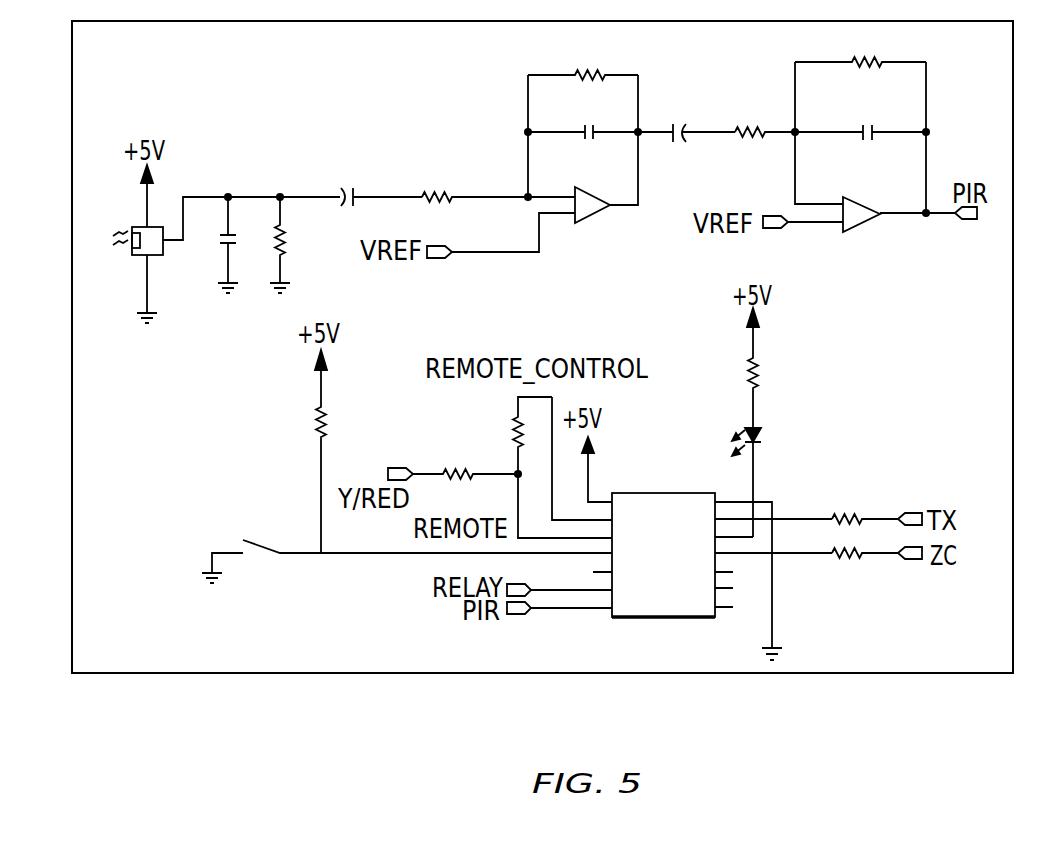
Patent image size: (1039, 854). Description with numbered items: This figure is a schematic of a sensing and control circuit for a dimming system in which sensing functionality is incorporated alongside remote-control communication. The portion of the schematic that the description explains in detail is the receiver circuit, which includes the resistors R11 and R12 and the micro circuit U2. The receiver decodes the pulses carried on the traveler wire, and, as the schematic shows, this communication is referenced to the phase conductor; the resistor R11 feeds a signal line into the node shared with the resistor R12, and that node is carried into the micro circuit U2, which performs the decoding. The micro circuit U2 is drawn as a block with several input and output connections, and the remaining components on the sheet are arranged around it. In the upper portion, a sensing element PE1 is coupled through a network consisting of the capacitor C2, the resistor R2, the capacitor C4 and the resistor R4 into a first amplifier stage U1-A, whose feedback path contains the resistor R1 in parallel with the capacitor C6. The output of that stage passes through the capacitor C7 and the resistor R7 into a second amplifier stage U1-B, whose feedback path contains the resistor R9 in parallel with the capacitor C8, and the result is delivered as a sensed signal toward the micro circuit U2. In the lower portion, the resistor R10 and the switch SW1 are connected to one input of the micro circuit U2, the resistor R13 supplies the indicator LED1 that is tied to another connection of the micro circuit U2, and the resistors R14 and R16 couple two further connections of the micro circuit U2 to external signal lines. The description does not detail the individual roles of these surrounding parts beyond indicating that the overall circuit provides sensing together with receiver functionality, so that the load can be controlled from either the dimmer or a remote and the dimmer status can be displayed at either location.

The photoelectric sensor PE1 is at (130, 253).
The capacitor C2 is at (244, 245).
The resistor R2 is at (296, 245).
The capacitor C4 is at (378, 182).
The resistor R4 is at (475, 180).
The resistor R1 is at (583, 60).
The capacitor C6 is at (583, 117).
The operational amplifier U1-A is at (606, 220).
The capacitor C7 is at (700, 119).
The resistor R7 is at (765, 116).
The resistor R9 is at (860, 48).
The capacitor C8 is at (860, 118).
The operational amplifier U1-B is at (874, 231).
The resistor R10 is at (344, 461).
The switch SW1 is at (407, 548).
The resistor R12 is at (542, 467).
The resistor R11 is at (465, 459).
The micro circuit U2 is at (631, 540).
The resistor R14 is at (861, 506).
The resistor R16 is at (861, 572).
The resistor R13 is at (776, 377).
The light emitting diode LED1 is at (724, 469).